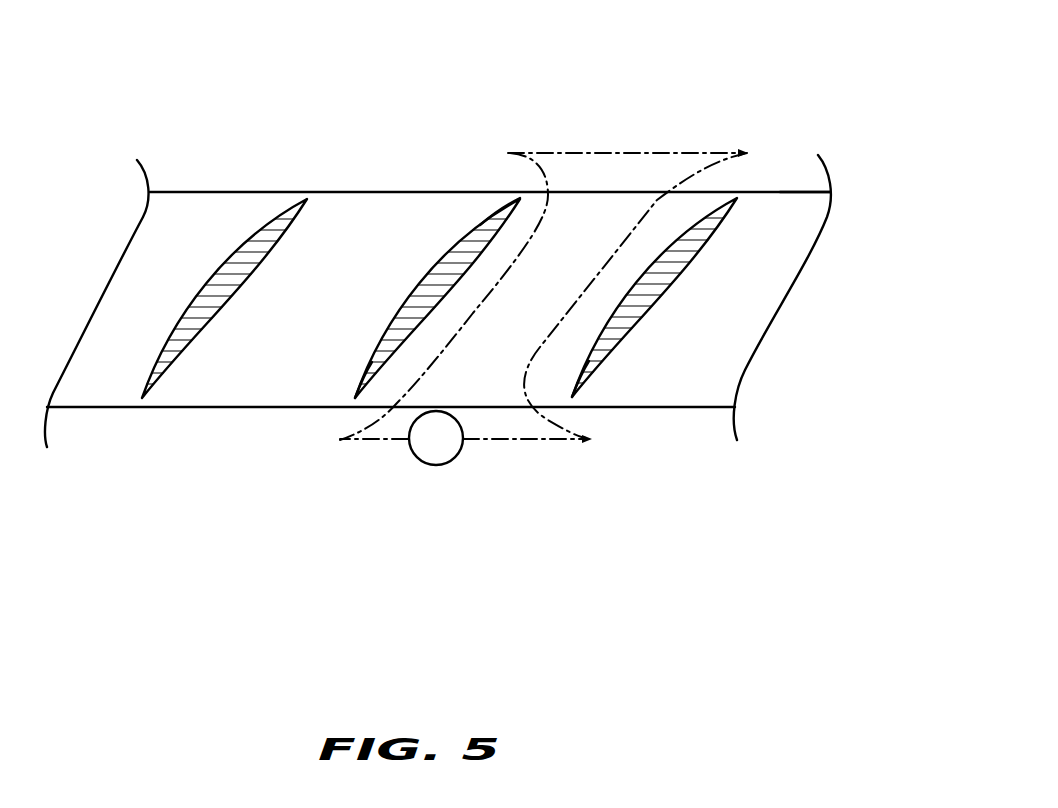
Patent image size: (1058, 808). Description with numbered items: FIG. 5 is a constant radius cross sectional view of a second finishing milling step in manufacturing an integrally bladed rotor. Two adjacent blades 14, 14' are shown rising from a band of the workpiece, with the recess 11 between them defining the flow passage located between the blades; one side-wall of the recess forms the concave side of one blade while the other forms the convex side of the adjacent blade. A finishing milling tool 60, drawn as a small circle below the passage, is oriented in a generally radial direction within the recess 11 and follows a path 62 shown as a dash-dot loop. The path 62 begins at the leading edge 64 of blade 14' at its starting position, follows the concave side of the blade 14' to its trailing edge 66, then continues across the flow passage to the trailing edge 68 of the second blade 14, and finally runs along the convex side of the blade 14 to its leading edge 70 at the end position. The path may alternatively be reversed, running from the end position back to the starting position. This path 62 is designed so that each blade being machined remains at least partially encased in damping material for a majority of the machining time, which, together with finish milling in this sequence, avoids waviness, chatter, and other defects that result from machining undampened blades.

The recess 11 is at (500, 322).
The blade 14 is at (670, 297).
The blade 14' is at (384, 298).
The finishing milling tool 60 is at (436, 465).
The path 62 is at (612, 152).
The leading edge 64 is at (523, 198).
The trailing edge 66 is at (355, 398).
The trailing edge 68 is at (572, 397).
The leading edge 70 is at (815, 192).